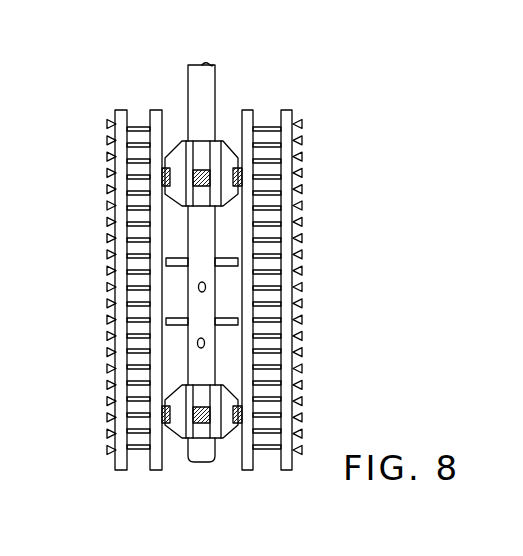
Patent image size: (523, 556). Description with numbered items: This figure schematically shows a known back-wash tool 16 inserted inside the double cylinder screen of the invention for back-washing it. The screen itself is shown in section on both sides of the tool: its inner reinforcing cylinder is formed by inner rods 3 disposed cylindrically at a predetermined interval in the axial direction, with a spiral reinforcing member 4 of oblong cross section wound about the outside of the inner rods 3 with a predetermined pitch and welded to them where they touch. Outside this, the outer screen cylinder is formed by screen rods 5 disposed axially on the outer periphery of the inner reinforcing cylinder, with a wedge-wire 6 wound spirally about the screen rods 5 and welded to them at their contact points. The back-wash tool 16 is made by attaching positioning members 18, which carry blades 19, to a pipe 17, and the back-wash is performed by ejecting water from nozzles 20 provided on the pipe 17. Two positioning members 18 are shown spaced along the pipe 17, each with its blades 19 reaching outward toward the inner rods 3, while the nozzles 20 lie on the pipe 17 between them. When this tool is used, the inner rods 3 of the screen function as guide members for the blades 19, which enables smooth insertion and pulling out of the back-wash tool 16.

The inner rods 3 is at (247, 452).
The spiral reinforcing member 4 is at (266, 128).
The screen rods 5 is at (291, 120).
The wedge-wire 6 is at (305, 143).
The back-wash tool 16 is at (241, 77).
The pipe 17 is at (187, 92).
The positioning members 18 is at (232, 128).
The blades 19 is at (235, 186).
The nozzles 20 is at (173, 258).